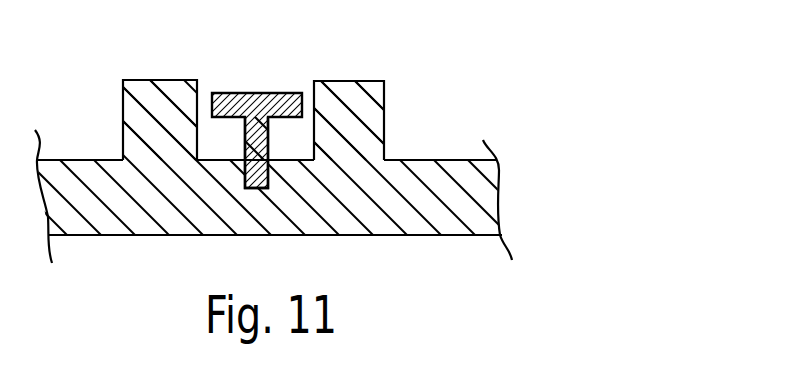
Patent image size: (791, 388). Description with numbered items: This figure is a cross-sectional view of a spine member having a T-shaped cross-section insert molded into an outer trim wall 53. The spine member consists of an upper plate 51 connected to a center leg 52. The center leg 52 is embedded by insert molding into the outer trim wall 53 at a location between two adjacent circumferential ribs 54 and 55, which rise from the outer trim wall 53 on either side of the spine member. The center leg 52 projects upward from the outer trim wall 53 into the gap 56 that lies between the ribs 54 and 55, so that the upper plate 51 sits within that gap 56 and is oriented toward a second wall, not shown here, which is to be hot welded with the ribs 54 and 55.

The upper plate 51 is at (252, 100).
The center leg 52 is at (268, 145).
The outer trim wall 53 is at (108, 218).
The circumferential rib 54 is at (147, 92).
The circumferential rib 55 is at (368, 117).
The gap 56 is at (215, 135).